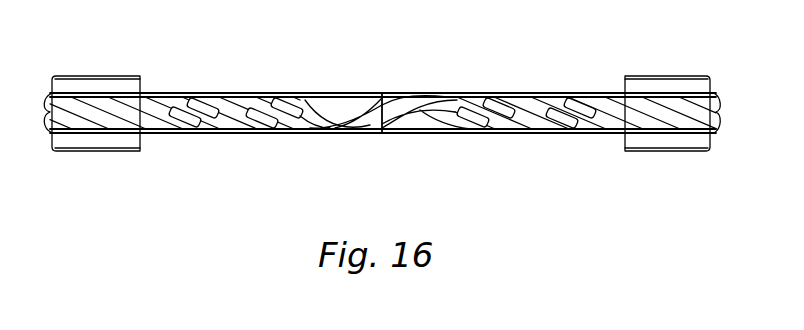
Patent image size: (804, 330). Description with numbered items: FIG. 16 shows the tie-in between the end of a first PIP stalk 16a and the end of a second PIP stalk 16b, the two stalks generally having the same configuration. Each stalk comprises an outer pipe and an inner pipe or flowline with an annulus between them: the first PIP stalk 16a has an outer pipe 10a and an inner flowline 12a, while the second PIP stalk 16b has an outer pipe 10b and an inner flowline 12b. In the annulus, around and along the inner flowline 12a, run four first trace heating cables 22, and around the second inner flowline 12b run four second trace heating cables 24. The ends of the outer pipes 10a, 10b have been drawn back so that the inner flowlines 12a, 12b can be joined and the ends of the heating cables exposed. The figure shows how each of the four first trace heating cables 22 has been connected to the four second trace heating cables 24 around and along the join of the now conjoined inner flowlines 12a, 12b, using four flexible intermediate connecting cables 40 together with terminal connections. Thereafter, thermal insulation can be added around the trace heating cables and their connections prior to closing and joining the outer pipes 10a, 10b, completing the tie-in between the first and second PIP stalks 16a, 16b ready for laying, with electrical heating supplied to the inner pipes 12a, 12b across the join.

The outer pipe 10a is at (170, 178).
The outer pipe 10b is at (613, 178).
The inner pipe or flowline 12a is at (282, 133).
The inner flowline 12b is at (453, 93).
The first PIP stalk 16a is at (117, 74).
The second PIP stalk 16b is at (667, 76).
The first trace heating cables 22 is at (156, 100).
The second trace heating cables 24 is at (532, 124).
The flexible intermediate connecting cables 40 is at (343, 122).